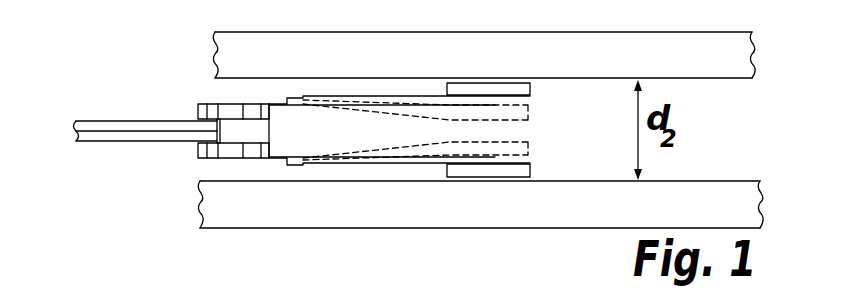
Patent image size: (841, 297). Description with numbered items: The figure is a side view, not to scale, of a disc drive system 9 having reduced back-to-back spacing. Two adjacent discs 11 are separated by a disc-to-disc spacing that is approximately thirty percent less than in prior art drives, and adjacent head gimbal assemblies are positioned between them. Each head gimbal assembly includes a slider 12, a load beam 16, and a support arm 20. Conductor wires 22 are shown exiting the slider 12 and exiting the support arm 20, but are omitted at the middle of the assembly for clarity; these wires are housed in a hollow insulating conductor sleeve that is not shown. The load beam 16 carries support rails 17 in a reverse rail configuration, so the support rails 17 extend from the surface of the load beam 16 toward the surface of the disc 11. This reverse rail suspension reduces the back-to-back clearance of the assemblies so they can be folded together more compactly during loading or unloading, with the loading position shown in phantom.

The disc drive system 9 is at (157, 69).
The disc 11 is at (755, 58).
The slider 12 is at (468, 86).
The load beam 16 is at (367, 90).
The support rail 17 is at (300, 99).
The support arm 20 is at (232, 104).
The conductor wire 22 is at (197, 108).